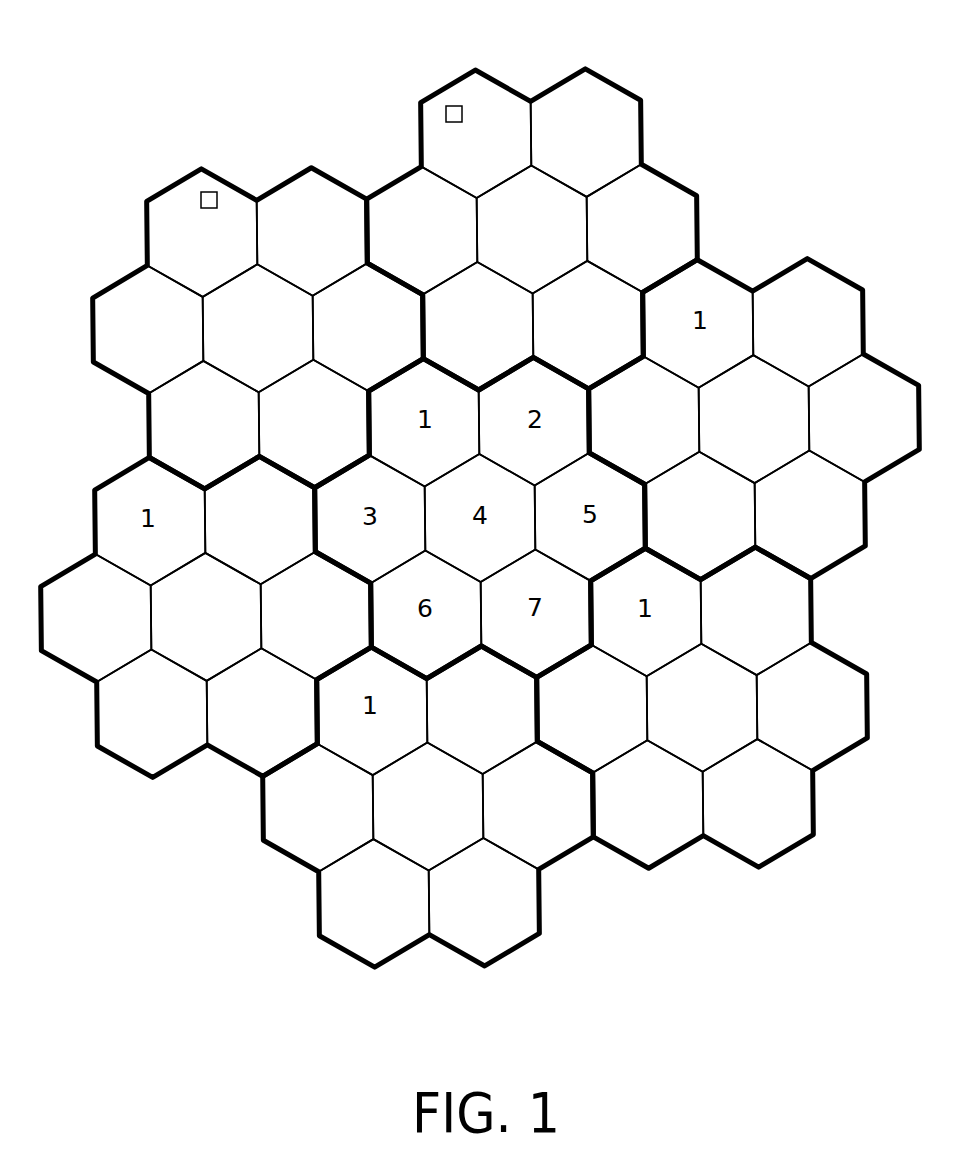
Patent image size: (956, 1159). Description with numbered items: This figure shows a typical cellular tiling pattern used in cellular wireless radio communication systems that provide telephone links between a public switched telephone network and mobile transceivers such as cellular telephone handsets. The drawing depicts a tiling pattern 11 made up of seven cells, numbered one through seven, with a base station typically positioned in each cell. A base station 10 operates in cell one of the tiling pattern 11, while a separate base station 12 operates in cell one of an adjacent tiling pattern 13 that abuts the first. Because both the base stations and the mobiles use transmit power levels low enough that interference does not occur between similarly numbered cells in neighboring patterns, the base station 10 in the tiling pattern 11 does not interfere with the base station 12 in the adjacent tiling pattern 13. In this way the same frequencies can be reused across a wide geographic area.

The base station 10 is at (448, 108).
The tiling pattern 11 is at (688, 127).
The base station 12 is at (212, 197).
The adjacent tiling pattern 13 is at (115, 243).